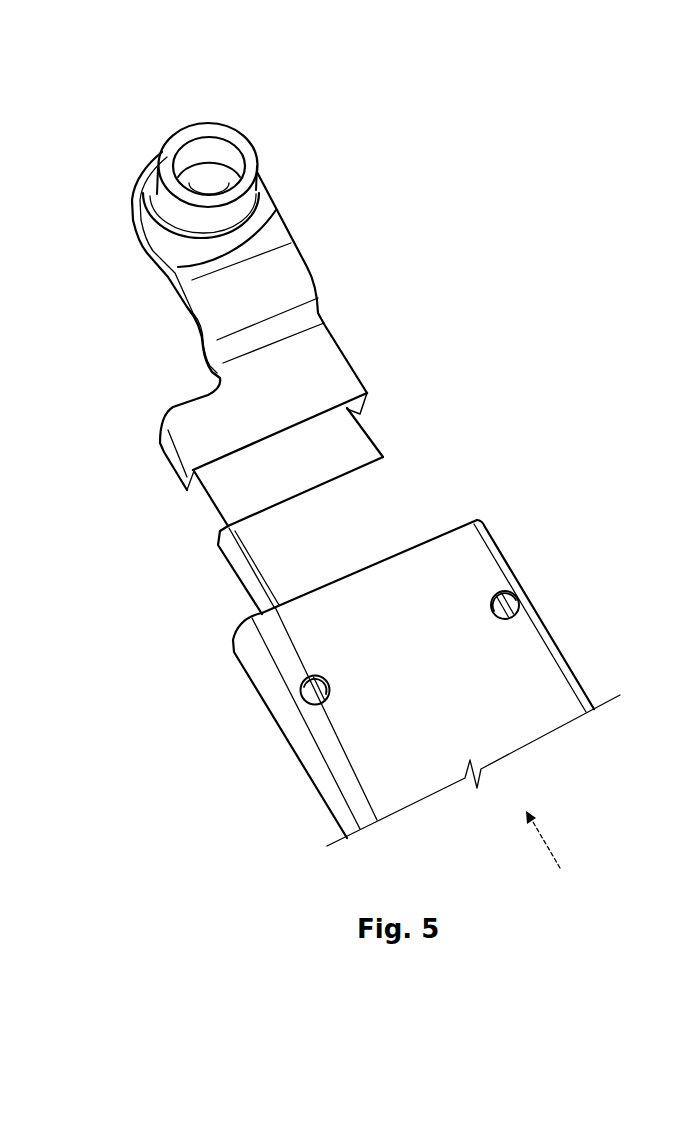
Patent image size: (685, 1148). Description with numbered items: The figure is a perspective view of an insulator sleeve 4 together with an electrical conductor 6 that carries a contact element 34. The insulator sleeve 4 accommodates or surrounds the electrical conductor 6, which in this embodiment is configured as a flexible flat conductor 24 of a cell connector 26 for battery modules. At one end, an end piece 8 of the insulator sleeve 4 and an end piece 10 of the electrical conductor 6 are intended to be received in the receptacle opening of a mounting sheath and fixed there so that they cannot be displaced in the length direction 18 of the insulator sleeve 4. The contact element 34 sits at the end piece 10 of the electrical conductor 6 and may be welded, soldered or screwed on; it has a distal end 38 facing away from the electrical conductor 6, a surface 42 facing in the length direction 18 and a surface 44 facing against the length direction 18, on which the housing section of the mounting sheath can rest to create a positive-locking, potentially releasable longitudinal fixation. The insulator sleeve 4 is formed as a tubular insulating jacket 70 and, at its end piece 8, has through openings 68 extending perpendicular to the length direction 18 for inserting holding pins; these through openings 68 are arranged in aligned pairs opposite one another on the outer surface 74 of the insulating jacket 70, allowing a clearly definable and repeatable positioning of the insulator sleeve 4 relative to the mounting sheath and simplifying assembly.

The insulator sleeve 4 is at (547, 698).
The electrical conductor 6 is at (363, 455).
The end piece of the insulator sleeve 8 is at (214, 678).
The end piece of the electrical conductor 10 is at (180, 519).
The length direction 18 is at (548, 847).
The flexible flat conductor 24 is at (387, 500).
The cell connector 26 is at (347, 481).
The contact element 34 is at (327, 367).
The distal end 38 is at (241, 96).
The surface facing in the length direction 42 is at (170, 134).
The surface facing against the length direction 44 is at (200, 145).
The through opening 68 is at (290, 696).
The insulating jacket 70 is at (443, 683).
The outer surface 74 is at (548, 694).